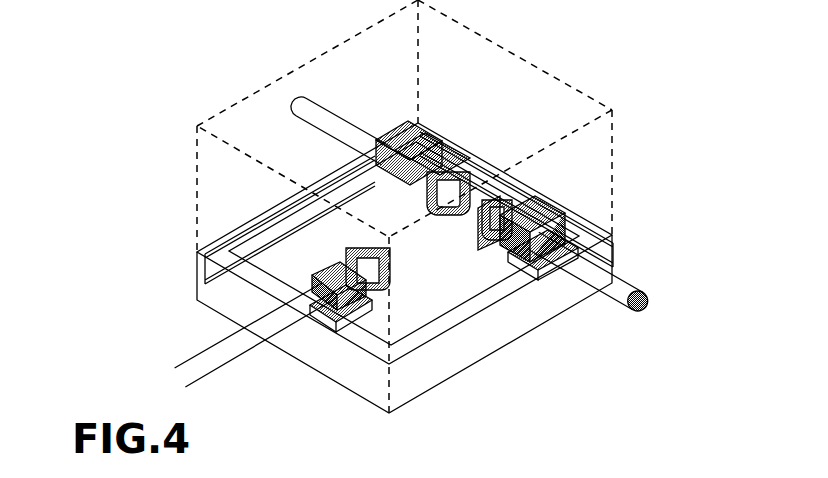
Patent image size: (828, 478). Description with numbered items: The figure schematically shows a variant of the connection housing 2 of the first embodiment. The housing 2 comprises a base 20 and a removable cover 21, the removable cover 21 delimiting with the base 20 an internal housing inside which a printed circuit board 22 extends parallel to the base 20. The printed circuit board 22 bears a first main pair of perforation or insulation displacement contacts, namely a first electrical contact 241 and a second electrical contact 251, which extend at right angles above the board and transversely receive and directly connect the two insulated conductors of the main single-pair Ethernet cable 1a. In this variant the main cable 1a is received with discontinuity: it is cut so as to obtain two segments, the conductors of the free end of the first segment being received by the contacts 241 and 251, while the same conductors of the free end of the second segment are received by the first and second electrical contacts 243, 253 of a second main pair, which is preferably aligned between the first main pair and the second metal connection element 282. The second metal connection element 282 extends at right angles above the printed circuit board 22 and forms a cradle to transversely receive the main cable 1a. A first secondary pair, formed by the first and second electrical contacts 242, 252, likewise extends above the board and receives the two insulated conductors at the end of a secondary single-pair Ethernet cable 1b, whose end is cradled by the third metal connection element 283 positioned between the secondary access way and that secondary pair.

The connection housing 2 is at (166, 141).
The main single-pair Ethernet cable 1a is at (333, 98).
The secondary single-pair Ethernet cable 1b is at (233, 378).
The base 20 is at (440, 357).
The removable cover 21 is at (557, 89).
The printed circuit board 22 is at (267, 267).
The first electrical contact of the first main pair 241 is at (442, 168).
The first electrical contact of the first secondary pair 242 is at (387, 287).
The first electrical contact of the second main pair 243 is at (518, 207).
The second electrical contact of the first main pair 251 is at (440, 207).
The second electrical contact of the first secondary pair 252 is at (346, 253).
The second electrical contact of the second main pair 253 is at (487, 242).
The second metal connection element 282 is at (543, 271).
The third metal connection element 283 is at (333, 317).